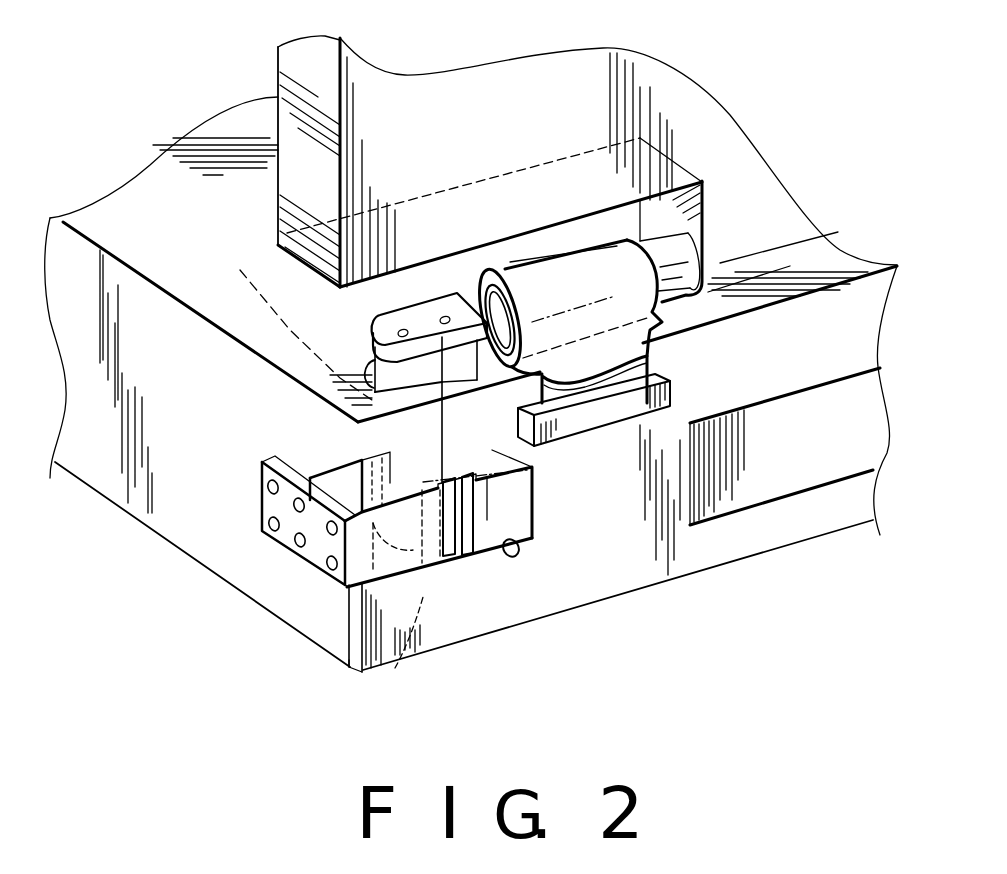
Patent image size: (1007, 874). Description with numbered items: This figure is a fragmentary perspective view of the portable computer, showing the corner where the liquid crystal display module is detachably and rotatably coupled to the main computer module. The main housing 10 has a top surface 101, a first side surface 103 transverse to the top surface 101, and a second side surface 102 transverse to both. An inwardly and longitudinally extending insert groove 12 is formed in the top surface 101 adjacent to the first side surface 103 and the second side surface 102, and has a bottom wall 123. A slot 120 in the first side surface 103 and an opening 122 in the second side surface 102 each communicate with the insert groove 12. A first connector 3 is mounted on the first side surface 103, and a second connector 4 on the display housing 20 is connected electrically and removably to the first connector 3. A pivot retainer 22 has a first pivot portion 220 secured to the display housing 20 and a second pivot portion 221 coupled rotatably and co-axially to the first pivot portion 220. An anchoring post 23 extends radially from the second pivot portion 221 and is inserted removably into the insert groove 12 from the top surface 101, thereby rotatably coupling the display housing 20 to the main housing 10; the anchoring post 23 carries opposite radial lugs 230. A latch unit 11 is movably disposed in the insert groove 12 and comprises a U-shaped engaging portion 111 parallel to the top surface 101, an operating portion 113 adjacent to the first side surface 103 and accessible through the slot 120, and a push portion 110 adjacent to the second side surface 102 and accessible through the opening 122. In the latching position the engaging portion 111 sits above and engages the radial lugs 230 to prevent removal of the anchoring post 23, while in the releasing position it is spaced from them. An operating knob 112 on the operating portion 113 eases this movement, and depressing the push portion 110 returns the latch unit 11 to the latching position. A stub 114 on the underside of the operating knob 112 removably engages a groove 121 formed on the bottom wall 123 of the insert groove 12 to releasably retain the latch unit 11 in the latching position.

The main housing 10 is at (783, 547).
The top surface 101 is at (222, 302).
The second side surface 102 is at (148, 470).
The first side surface 103 is at (647, 553).
The latch unit 11 is at (253, 469).
The push portion 110 is at (297, 507).
The engaging portion 111 is at (302, 462).
The operating knob 112 is at (470, 517).
The operating portion 113 is at (490, 520).
The stub 114 is at (467, 515).
The slot 120 is at (518, 493).
The groove 121 is at (518, 556).
The opening 122 is at (345, 583).
The bottom wall 123 is at (350, 662).
The insert groove 12 is at (362, 370).
The display housing 20 is at (295, 82).
The pivot retainer 22 is at (698, 292).
The first pivot portion 220 is at (667, 247).
The second pivot portion 221 is at (448, 304).
The anchoring post 23 is at (301, 318).
The radial lug 230 is at (394, 647).
The first connector 3 is at (683, 421).
The second connector 4 is at (785, 446).